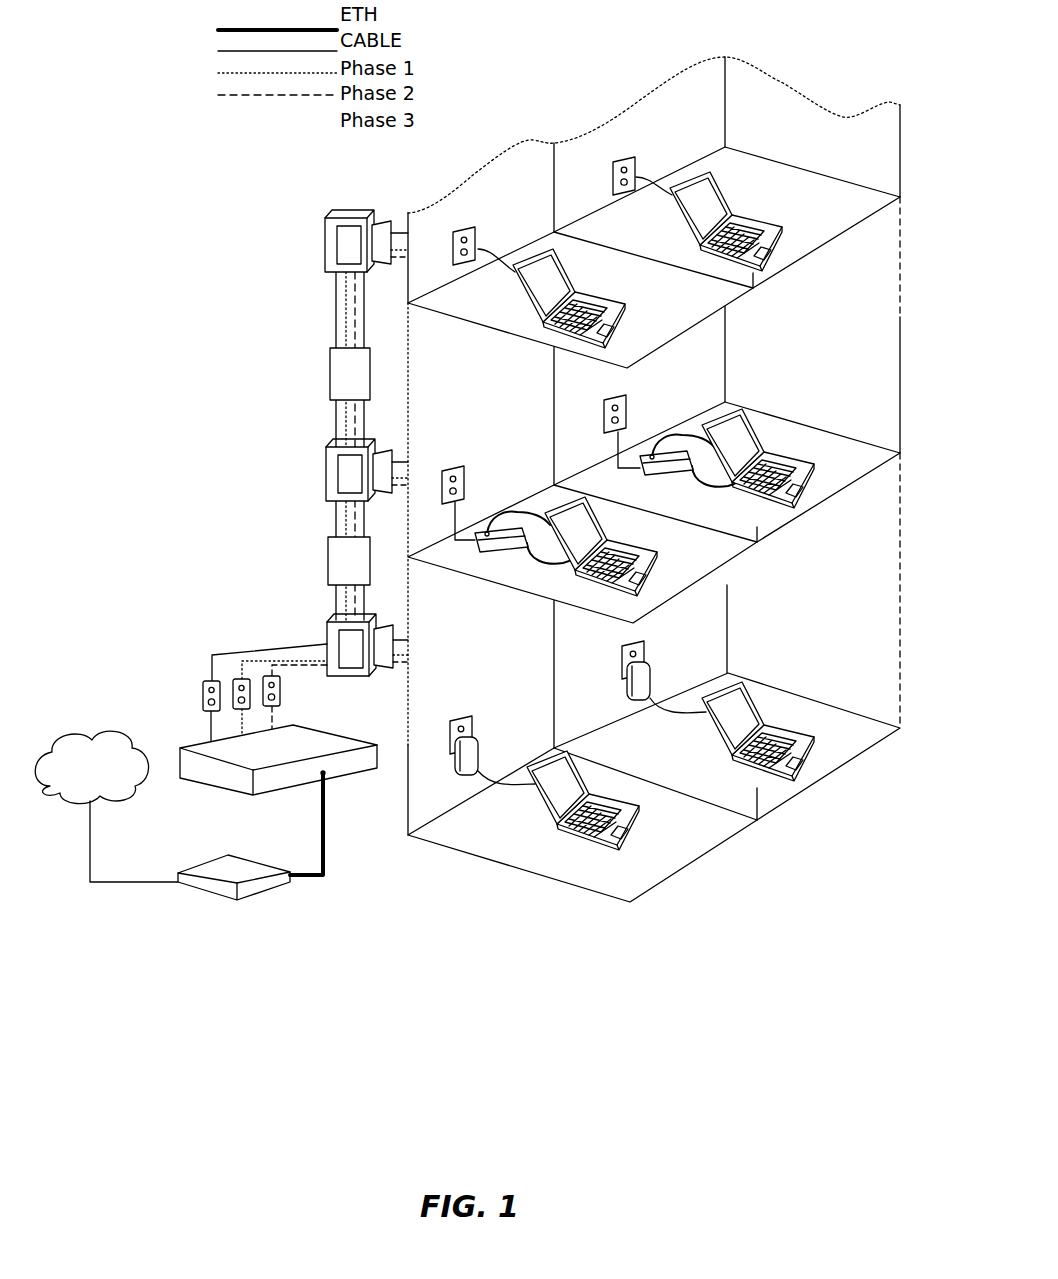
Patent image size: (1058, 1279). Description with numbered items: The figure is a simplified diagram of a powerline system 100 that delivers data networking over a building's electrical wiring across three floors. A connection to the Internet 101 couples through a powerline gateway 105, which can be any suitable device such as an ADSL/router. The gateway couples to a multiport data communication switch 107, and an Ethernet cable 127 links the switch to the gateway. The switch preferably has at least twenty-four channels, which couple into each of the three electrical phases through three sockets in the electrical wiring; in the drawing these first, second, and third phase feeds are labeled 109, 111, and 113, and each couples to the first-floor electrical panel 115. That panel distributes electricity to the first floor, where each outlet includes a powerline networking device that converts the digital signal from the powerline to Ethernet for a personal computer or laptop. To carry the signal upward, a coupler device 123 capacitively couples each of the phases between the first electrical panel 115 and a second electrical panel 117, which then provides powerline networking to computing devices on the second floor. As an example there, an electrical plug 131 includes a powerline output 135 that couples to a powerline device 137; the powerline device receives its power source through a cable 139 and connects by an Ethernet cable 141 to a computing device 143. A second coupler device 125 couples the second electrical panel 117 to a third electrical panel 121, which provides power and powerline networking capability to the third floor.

The powerline system 100 is at (213, 160).
The Internet 101 is at (108, 730).
The powerline gateway 105 is at (247, 868).
The multiport data communication switch 107 is at (340, 770).
The phase 1 feed outlet P1 109 is at (215, 653).
The phase 2 feed outlet P2 111 is at (257, 650).
The phase 3 feed outlet P3 113 is at (288, 640).
The electrical panel 115 is at (378, 640).
The second electrical panel 117 is at (365, 452).
The third electrical panel 121 is at (333, 270).
The coupler device 123 is at (340, 580).
The second coupler device 125 is at (340, 393).
The Ethernet cable 127 is at (327, 866).
The electrical plug 131 is at (450, 466).
The powerline output 135 is at (458, 492).
The powerline device 137 is at (483, 552).
The cable 139 is at (508, 517).
The Ethernet cable 141 is at (547, 562).
The computing device 143 is at (640, 552).